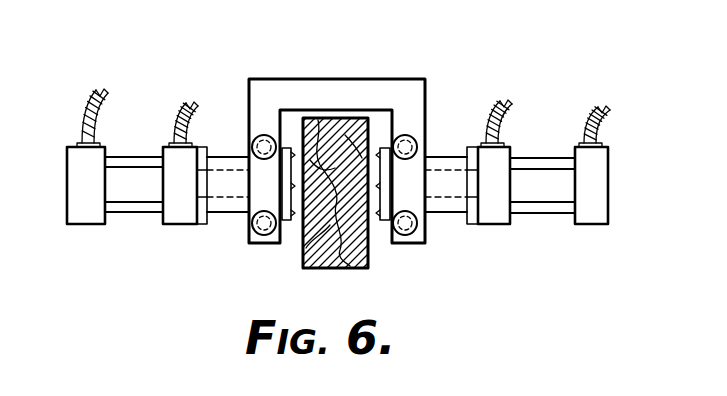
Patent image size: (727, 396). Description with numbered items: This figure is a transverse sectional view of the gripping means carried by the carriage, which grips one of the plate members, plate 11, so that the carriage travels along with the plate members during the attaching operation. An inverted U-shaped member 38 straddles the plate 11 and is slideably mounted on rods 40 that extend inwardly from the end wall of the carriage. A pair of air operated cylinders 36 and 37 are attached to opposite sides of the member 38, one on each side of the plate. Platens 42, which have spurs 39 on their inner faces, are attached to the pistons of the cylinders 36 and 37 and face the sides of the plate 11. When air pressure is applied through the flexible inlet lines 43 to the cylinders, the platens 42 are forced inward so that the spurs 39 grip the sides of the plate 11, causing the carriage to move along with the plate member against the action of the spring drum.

The plate member 11 is at (306, 266).
The air operated cylinder 36 is at (143, 167).
The air operated cylinder 37 is at (540, 172).
The inverted U-shaped member 38 is at (412, 63).
The spurs 39 is at (292, 150).
The rods 40 is at (417, 143).
The platens 42 is at (288, 223).
The flexible inlet lines 43 is at (83, 127).